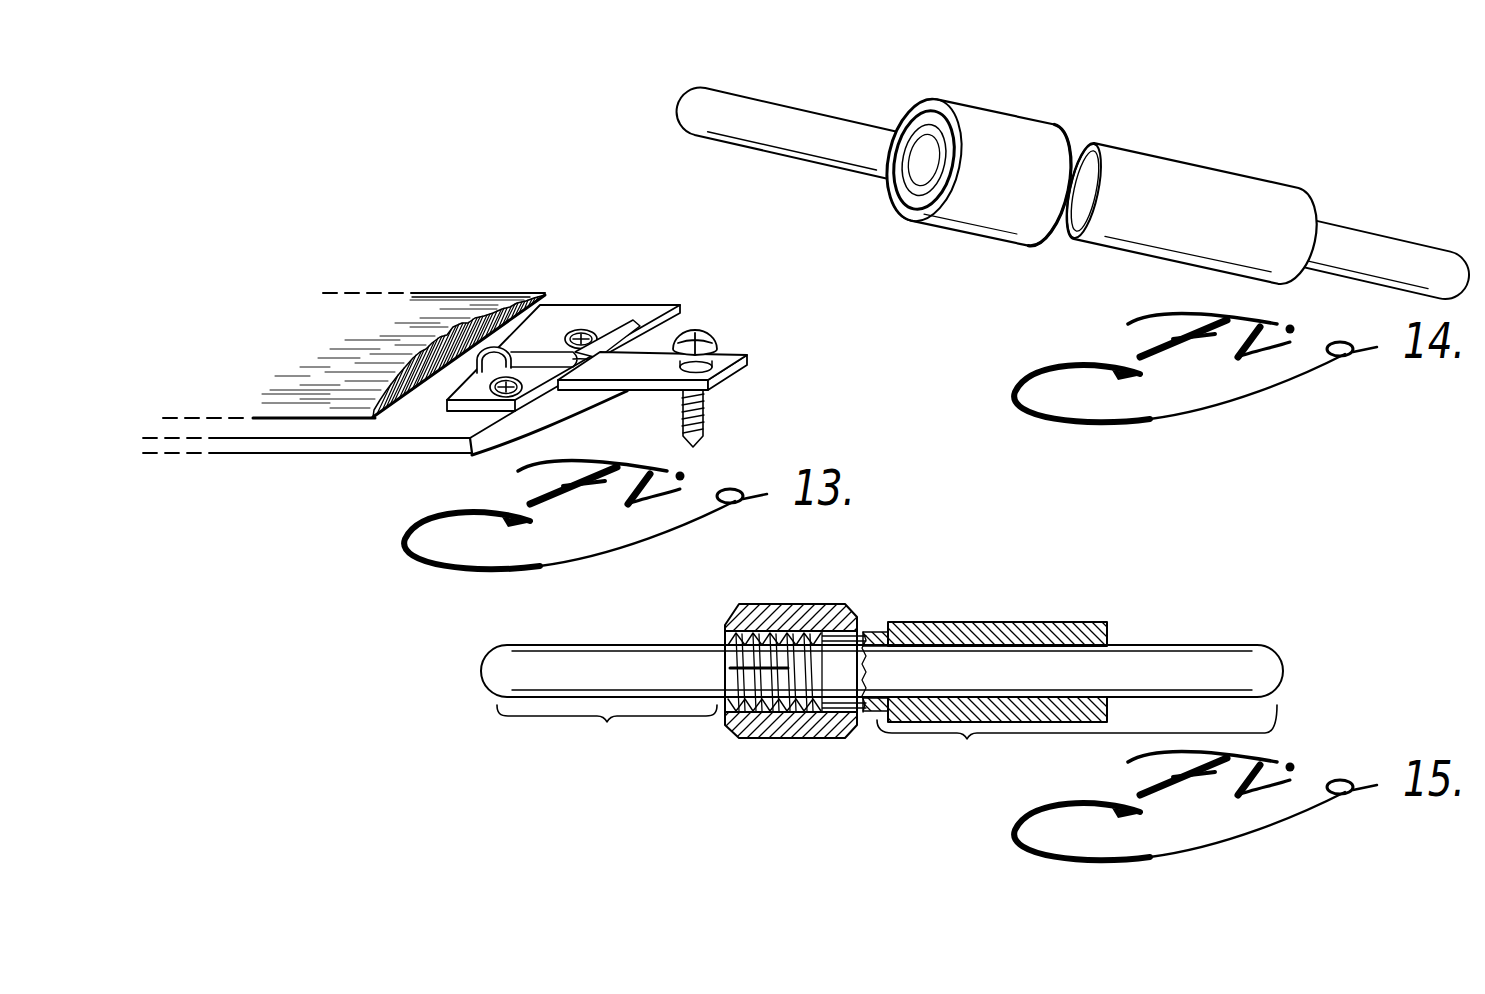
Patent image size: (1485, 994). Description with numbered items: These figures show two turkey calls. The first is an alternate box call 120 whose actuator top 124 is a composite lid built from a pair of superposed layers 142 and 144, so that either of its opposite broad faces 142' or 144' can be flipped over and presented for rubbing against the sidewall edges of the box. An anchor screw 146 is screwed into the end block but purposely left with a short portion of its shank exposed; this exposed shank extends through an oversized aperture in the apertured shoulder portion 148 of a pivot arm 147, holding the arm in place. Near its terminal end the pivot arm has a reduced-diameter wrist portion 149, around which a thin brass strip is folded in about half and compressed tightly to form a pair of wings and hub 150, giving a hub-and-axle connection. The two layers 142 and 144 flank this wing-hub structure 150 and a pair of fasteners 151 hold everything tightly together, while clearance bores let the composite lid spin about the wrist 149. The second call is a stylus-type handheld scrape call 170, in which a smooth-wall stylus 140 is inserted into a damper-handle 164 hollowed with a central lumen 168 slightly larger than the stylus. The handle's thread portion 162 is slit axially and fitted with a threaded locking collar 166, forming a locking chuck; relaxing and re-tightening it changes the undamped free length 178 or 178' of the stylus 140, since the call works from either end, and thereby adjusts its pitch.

In FIG. 13, the box call 120 is at (278, 373).
In FIG. 13, the actuator top 124 is at (546, 237).
In FIG. 14, the stylus 140 is at (803, 127).
In FIG. 15, the stylus 140 is at (637, 668).
In FIG. 13, the layer 142 is at (399, 335).
In FIG. 13, the broad face 142' is at (459, 320).
In FIG. 13, the layer 144 is at (421, 458).
In FIG. 13, the broad face 144' is at (347, 468).
In FIG. 13, the anchor screw 146 is at (700, 399).
In FIG. 13, the pivot arm 147 is at (723, 352).
In FIG. 13, the apertured shoulder portion 148 is at (652, 366).
In FIG. 13, the reduced-diameter wrist portion 149 is at (660, 327).
In FIG. 13, the wings and hub 150 is at (617, 327).
In FIG. 13, the fasteners 151 is at (588, 330).
In FIG. 15, the thread portion 162 is at (737, 640).
In FIG. 14, the damper-handle 164 is at (1257, 193).
In FIG. 14, the threaded locking collar 166 is at (1003, 132).
In FIG. 15, the threaded locking collar 166 is at (787, 607).
In FIG. 15, the central lumen 168 is at (1100, 655).
In FIG. 14, the stylus-type handheld scrape call 170 is at (1222, 134).
In FIG. 15, the stylus-type handheld scrape call 170 is at (1034, 582).
In FIG. 15, the undamped free length 178 is at (1077, 740).
In FIG. 15, the undamped free length 178' is at (607, 731).